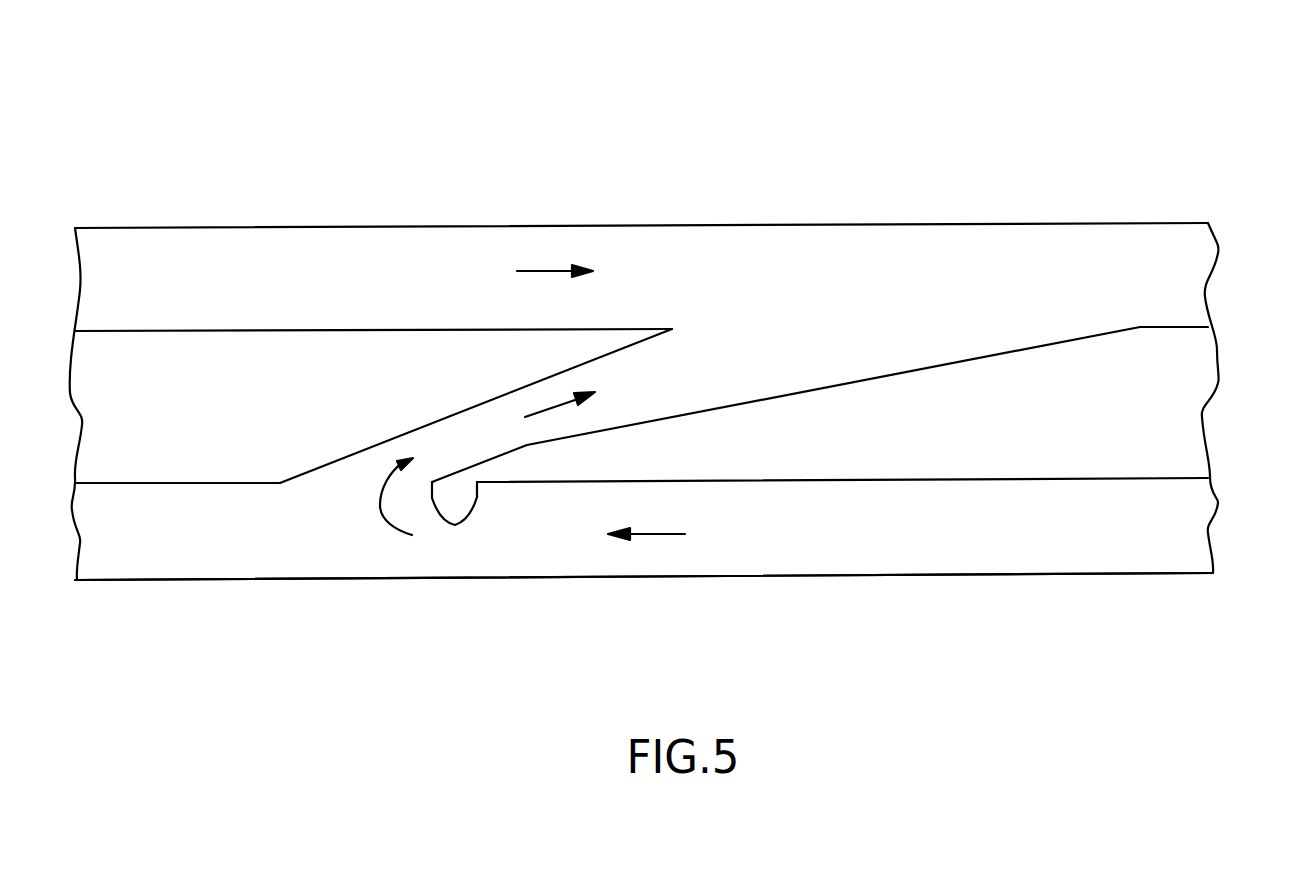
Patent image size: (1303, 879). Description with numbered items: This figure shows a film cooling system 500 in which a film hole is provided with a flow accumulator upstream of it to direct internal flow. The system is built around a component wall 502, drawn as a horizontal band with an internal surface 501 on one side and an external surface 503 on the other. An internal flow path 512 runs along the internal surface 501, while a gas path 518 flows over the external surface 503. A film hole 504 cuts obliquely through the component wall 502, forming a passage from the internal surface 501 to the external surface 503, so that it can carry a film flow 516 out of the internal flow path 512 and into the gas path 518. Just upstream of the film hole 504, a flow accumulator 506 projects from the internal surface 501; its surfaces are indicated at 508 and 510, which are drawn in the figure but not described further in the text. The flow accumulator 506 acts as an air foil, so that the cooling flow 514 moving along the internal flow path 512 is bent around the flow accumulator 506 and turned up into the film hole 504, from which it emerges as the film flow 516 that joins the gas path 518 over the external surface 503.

The film cooling system 500 is at (173, 160).
The internal surface 501 is at (232, 483).
The component wall 502 is at (157, 483).
The external surface 503 is at (227, 331).
The film hole 504 is at (567, 378).
The flow accumulator 506 is at (455, 525).
The groove right side wall 508 is at (478, 507).
The groove left side wall / sloped surface 510 is at (430, 503).
The internal flow path 512 is at (658, 534).
The cooling flow 514 is at (380, 513).
The film flow 516 is at (545, 410).
The gas path 518 is at (543, 268).